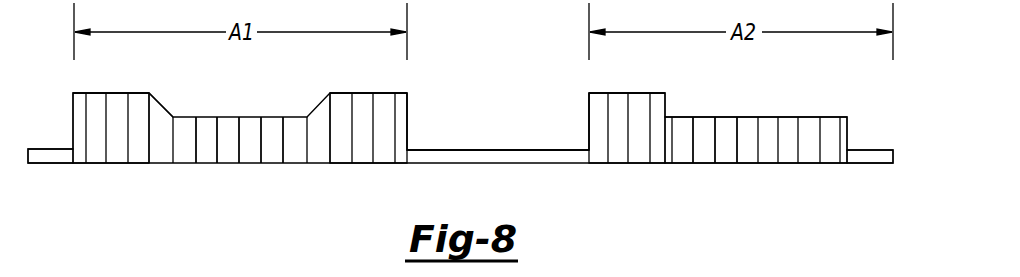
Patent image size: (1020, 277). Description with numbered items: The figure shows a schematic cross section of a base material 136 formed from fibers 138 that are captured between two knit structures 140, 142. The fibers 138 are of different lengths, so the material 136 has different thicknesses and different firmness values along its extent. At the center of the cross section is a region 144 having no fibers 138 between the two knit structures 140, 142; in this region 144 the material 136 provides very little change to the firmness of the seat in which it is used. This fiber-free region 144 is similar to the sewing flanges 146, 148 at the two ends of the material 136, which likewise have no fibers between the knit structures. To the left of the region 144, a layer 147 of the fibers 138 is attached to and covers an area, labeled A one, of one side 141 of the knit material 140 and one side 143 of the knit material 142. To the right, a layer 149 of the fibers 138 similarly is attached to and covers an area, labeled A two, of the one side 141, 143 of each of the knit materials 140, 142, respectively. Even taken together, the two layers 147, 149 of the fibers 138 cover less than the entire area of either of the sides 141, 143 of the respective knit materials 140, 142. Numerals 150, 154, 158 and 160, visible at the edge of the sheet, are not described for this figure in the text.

The material 136 is at (515, 65).
The fibers 138 is at (251, 141).
The knit structure 140 is at (343, 93).
The side of the knit material 141 is at (114, 97).
The knit structure 142 is at (385, 163).
The side of the knit material 143 is at (156, 156).
The region 144 is at (476, 124).
The sewing flange 146 is at (65, 148).
The layer of the fibers 147 is at (110, 176).
The sewing flange 148 is at (863, 150).
The layer of the fibers 149 is at (811, 180).
The element 150 (adjacent figure) 150 is at (635, 271).
The element 154 (adjacent figure) 154 is at (319, 273).
The element 158 (adjacent figure) 158 is at (51, 266).
The element 160 (adjacent figure) 160 is at (845, 271).